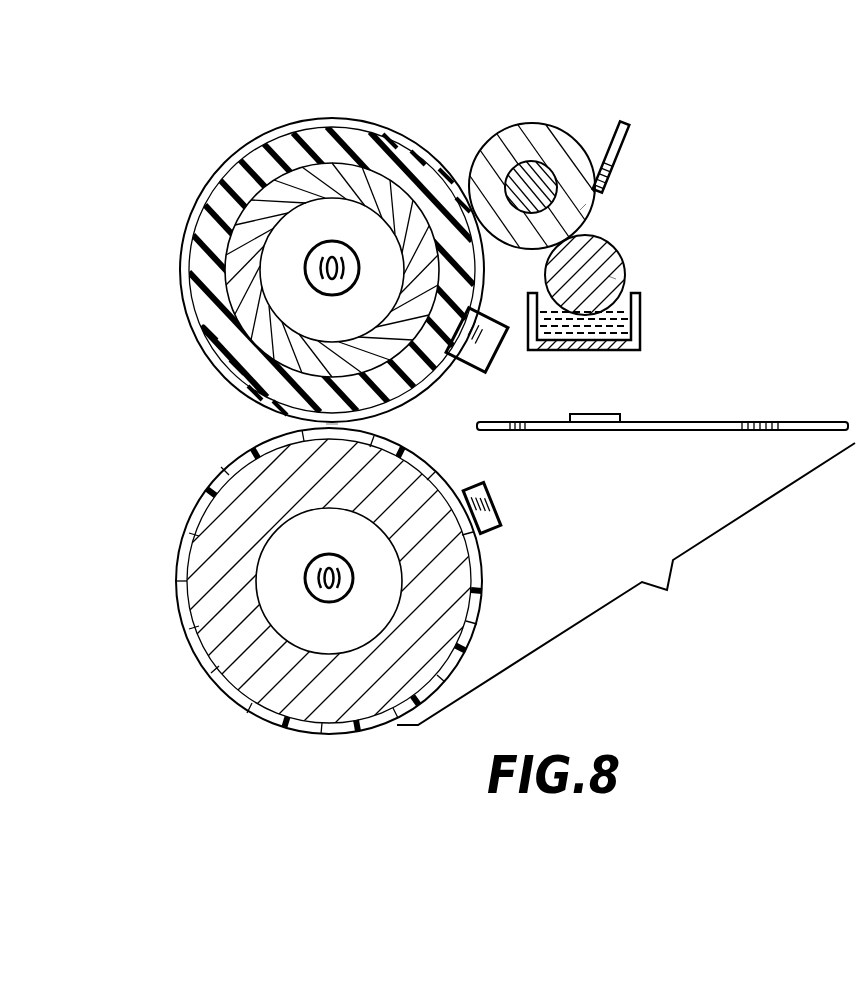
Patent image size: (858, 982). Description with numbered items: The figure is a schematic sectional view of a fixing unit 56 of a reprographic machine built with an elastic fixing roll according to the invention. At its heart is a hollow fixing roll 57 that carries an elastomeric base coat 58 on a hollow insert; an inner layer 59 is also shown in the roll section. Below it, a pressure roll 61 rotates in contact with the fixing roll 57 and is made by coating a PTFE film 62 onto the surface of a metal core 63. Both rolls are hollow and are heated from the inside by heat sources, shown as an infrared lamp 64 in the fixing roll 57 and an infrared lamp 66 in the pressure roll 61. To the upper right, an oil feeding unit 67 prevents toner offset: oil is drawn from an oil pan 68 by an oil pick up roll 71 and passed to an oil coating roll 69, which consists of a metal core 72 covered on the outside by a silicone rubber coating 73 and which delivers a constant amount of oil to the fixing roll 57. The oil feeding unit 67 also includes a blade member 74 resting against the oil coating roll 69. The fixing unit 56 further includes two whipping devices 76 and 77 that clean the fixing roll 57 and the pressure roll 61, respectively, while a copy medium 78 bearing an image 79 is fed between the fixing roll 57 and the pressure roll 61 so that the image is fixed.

The fixing unit 56 is at (458, 160).
The fixing roll 57 is at (186, 192).
The elastomeric base coat 58 is at (275, 150).
The inner layer of upper roller 59 is at (356, 180).
The infrared lamp 64 is at (330, 257).
The pressure roll 61 is at (280, 736).
The PTFE film 62 is at (213, 673).
The metal core 63 is at (441, 586).
The infrared lamp 66 is at (348, 565).
The oil feeding unit 67 is at (625, 224).
The oil pan 68 is at (640, 313).
The oil coating roll 69 is at (544, 112).
The oil pick up roll 71 is at (612, 279).
The metal core 72 is at (545, 165).
The silicone rubber coating 73 is at (585, 207).
The blade member 74 is at (620, 160).
The whipping device 76 is at (485, 362).
The whipping device 77 is at (495, 506).
The copy medium 78 is at (767, 422).
The image 79 is at (616, 408).